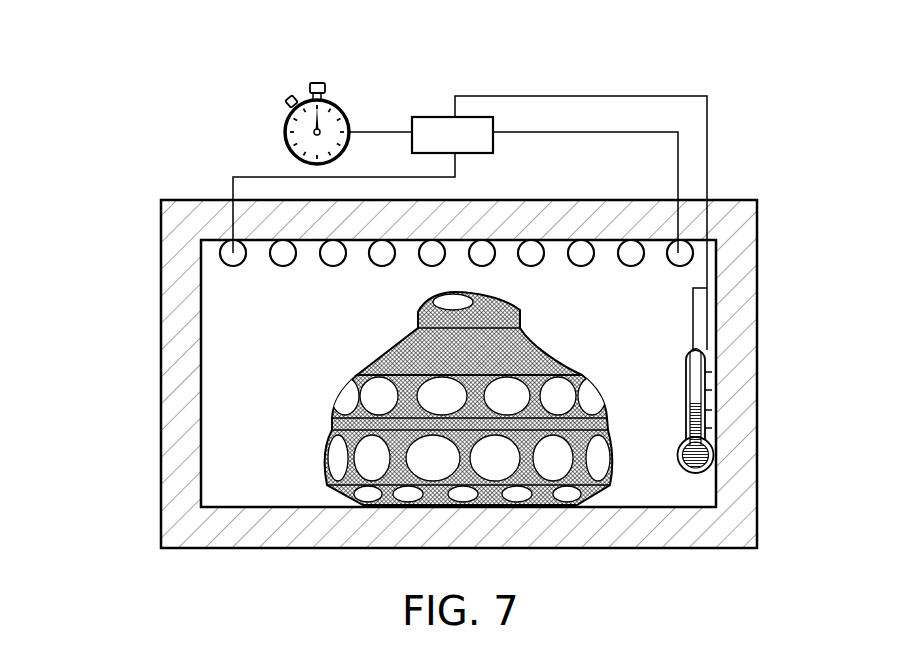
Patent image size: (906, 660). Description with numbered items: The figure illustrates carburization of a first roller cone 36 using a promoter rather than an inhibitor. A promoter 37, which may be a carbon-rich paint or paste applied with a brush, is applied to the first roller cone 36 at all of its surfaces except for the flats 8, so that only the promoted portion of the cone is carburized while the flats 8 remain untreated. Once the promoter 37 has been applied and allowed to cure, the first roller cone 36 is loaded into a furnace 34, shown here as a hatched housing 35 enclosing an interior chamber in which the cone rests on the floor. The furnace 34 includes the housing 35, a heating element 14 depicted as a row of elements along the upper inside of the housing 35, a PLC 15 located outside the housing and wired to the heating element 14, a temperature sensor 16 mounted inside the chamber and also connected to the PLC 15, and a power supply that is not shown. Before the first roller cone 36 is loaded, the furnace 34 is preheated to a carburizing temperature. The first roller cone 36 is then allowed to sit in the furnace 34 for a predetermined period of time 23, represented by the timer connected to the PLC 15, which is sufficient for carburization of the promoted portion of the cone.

The furnace 34 is at (108, 93).
The housing 35 is at (184, 200).
The first roller cone 36 is at (287, 345).
The heating element 14 is at (220, 243).
The predetermined period of time 23 is at (285, 110).
The PLC 15 is at (493, 150).
The flats 8 is at (482, 398).
The promoter 37 is at (400, 350).
The temperature sensor 16 is at (684, 446).